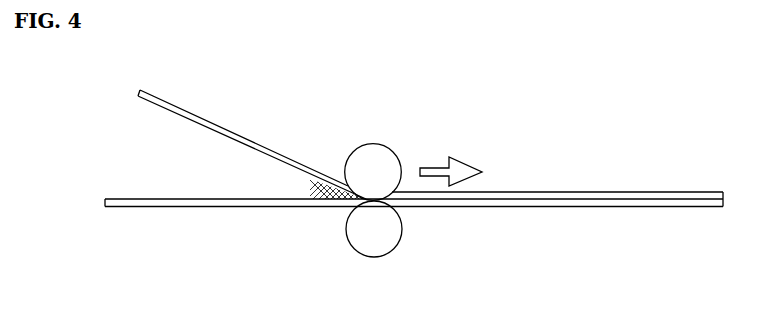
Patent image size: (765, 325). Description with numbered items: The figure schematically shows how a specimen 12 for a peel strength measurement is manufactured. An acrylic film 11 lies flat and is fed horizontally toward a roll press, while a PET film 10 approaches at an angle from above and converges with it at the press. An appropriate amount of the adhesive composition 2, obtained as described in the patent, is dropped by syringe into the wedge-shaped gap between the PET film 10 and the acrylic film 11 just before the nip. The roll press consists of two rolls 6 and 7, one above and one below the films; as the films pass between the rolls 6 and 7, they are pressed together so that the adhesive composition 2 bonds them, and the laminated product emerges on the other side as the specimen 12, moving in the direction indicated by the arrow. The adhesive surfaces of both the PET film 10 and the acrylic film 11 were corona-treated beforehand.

The adhesive composition 2 is at (313, 208).
The roll 6 is at (362, 252).
The roll 7 is at (392, 146).
The PET film 10 is at (160, 99).
The acrylic film 11 is at (133, 197).
The specimen 12 is at (618, 190).